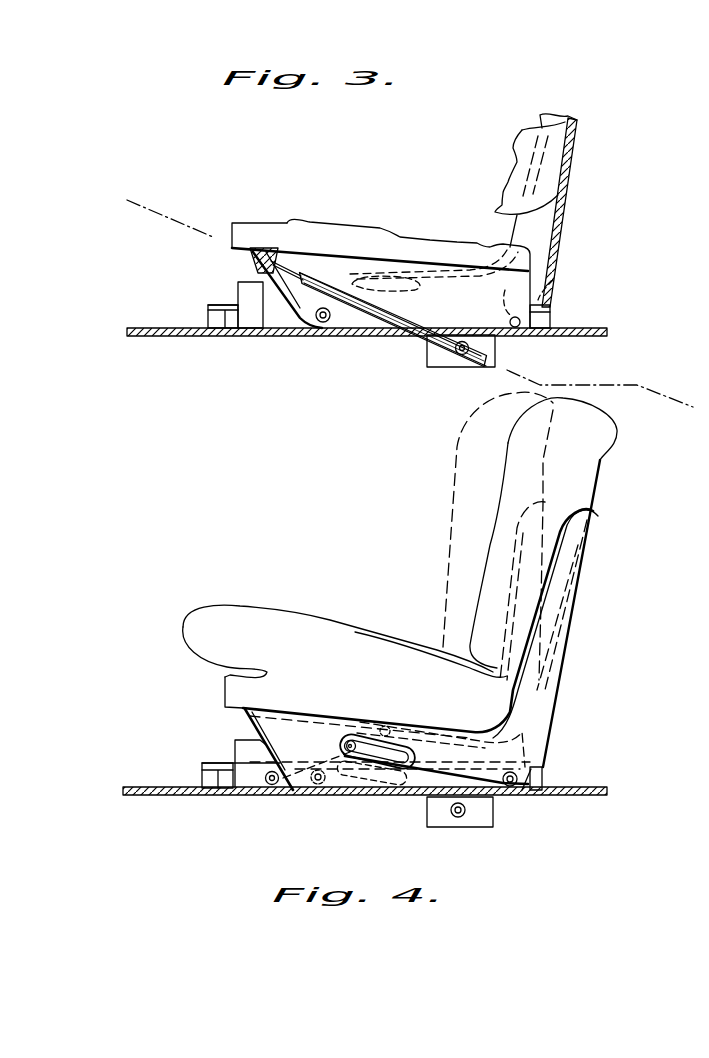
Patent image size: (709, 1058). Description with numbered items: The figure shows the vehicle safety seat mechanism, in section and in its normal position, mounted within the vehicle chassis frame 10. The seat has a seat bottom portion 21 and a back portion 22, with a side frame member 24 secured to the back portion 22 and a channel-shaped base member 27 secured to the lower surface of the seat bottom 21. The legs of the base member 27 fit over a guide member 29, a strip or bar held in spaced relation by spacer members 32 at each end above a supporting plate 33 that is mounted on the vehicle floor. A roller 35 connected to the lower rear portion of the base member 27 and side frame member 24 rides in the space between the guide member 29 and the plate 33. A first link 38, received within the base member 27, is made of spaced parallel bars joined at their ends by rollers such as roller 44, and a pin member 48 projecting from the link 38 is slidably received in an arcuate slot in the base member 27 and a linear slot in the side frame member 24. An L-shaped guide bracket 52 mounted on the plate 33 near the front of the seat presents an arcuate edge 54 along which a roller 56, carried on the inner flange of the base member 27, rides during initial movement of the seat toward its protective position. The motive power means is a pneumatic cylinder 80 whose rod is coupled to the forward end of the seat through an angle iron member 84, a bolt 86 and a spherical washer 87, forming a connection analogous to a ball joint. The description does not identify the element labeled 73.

In FIG. 3, the vehicle chassis frame 10 is at (124, 247).
In FIG. 4, the vehicle chassis frame 10 is at (653, 433).
In FIG. 3, the seat bottom portion 21 is at (387, 233).
In FIG. 4, the seat bottom portion 21 is at (293, 613).
In FIG. 3, the seat back portion 22 is at (530, 135).
In FIG. 4, the seat back portion 22 is at (517, 460).
In FIG. 3, the side frame member 24 is at (535, 218).
In FIG. 4, the side frame member 24 is at (563, 570).
In FIG. 4, the base member 27 is at (233, 714).
In FIG. 3, the guide member 29 is at (218, 300).
In FIG. 4, the guide member 29 is at (210, 762).
In FIG. 3, the spacer member 32 is at (551, 320).
In FIG. 4, the spacer member 32 is at (205, 775).
In FIG. 3, the supporting plate 33 is at (150, 336).
In FIG. 4, the supporting plate 33 is at (133, 795).
In FIG. 3, the roller 35 is at (553, 280).
In FIG. 4, the roller 35 is at (500, 797).
In FIG. 4, the first link 38 is at (307, 750).
In FIG. 4, the roller 44 is at (387, 725).
In FIG. 4, the pin member 48 is at (355, 735).
In FIG. 3, the guide bracket 52 is at (247, 292).
In FIG. 4, the guide bracket 52 is at (242, 752).
In FIG. 3, the arcuate edge 54 is at (263, 280).
In FIG. 4, the arcuate edge 54 is at (265, 735).
In FIG. 3, the roller 56 is at (343, 321).
In FIG. 4, the roller 56 is at (310, 790).
In FIG. 4, the pivot pin 73 is at (268, 793).
In FIG. 3, the pneumatic cylinder 80 is at (331, 272).
In FIG. 3, the angle iron member 84 is at (270, 249).
In FIG. 4, the bolt 86 is at (497, 820).
In FIG. 3, the spherical washer 87 is at (440, 362).